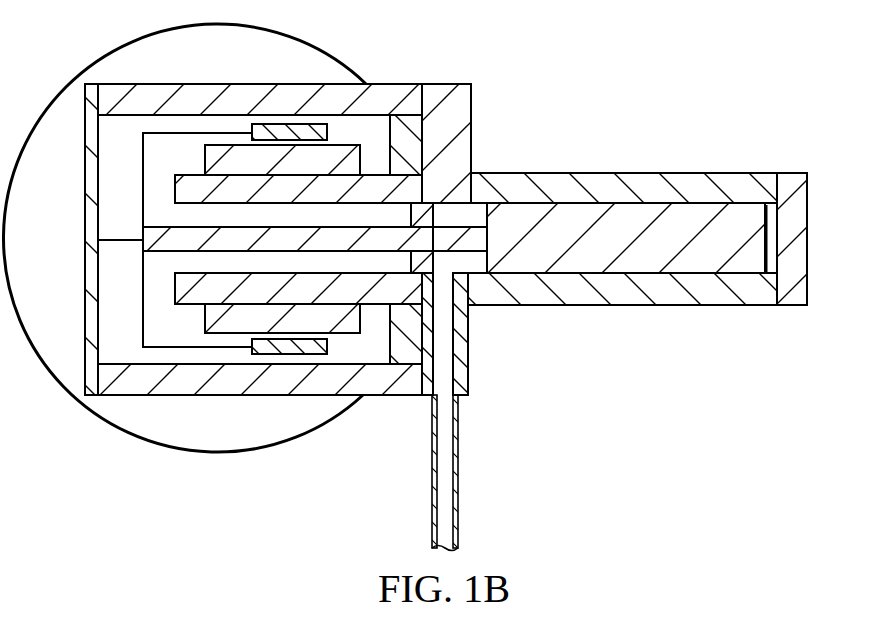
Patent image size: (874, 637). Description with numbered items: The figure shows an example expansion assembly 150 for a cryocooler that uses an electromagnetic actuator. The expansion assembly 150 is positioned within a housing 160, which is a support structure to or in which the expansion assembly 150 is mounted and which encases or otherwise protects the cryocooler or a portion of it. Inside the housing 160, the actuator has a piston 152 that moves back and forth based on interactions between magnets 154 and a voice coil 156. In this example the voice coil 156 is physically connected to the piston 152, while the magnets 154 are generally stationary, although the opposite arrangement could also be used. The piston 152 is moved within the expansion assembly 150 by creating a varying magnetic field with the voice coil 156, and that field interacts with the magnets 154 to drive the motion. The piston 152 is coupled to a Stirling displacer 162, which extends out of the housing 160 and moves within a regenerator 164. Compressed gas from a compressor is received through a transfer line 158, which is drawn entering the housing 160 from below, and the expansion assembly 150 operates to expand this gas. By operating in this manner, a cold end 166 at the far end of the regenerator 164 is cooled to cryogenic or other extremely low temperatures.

The expansion assembly 150 is at (630, 449).
The piston 152 is at (162, 236).
The magnets 154 is at (222, 150).
The voice coil 156 is at (288, 352).
The transfer line 158 is at (424, 502).
The housing 160 is at (385, 94).
The Stirling displacer 162 is at (680, 217).
The regenerator 164 is at (600, 183).
The cold end 166 is at (793, 182).